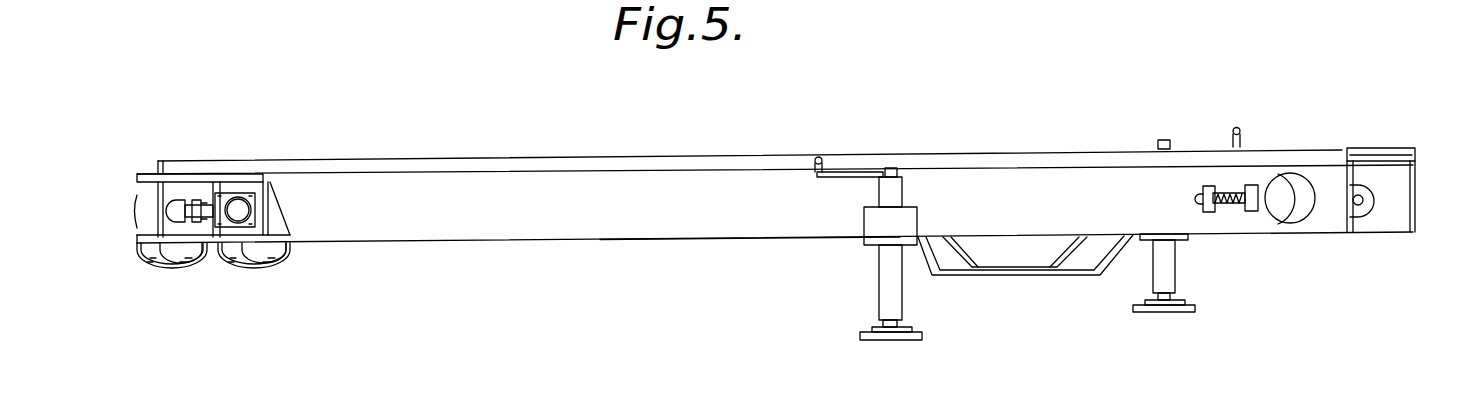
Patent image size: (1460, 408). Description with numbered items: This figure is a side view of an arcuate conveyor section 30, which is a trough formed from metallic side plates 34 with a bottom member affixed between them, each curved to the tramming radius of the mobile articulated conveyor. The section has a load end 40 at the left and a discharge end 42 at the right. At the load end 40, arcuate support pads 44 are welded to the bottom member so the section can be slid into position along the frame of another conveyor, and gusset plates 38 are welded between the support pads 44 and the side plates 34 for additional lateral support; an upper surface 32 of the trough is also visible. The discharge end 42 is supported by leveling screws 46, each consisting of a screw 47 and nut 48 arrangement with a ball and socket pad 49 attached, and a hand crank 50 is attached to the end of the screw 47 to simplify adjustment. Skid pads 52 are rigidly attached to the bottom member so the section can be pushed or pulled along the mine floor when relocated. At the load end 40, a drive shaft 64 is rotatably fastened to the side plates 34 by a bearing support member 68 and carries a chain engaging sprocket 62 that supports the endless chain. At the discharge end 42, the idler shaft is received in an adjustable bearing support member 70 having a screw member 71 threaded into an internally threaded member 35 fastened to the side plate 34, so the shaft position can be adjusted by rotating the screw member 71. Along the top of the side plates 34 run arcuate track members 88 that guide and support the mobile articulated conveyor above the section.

The conveyor section 30 is at (377, 252).
The beam lower surface 32 is at (808, 248).
The side plates 34 is at (1372, 222).
The internally threaded members 35 is at (1200, 200).
The gusset plates 38 is at (275, 217).
The load end 40 is at (115, 190).
The discharge end 42 is at (1425, 183).
The support pads 44 is at (260, 268).
The leveling screws 46 is at (910, 288).
The screw 47 is at (898, 190).
The nut 48 is at (883, 227).
The ball and socket pad 49 is at (873, 328).
The hand crank 50 is at (842, 172).
The skid pads 52 is at (1078, 276).
The chain engaging sprockets 62 is at (208, 230).
The drive shafts 64 is at (237, 207).
The bearing support members 68 is at (242, 198).
The adjustable bearing support members 70 is at (1290, 203).
The screw member 71 is at (1234, 190).
The arcuate track members 88 is at (360, 160).